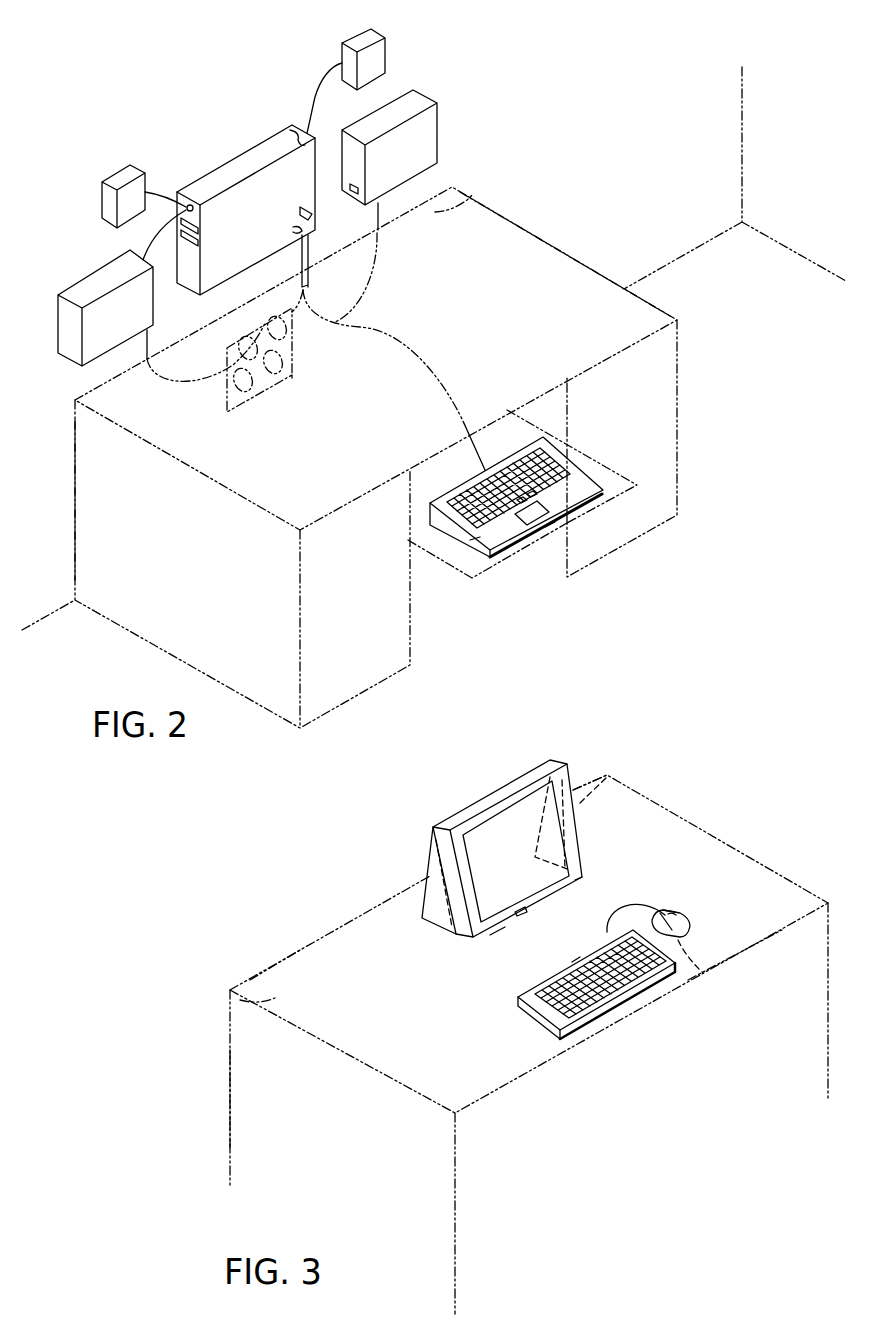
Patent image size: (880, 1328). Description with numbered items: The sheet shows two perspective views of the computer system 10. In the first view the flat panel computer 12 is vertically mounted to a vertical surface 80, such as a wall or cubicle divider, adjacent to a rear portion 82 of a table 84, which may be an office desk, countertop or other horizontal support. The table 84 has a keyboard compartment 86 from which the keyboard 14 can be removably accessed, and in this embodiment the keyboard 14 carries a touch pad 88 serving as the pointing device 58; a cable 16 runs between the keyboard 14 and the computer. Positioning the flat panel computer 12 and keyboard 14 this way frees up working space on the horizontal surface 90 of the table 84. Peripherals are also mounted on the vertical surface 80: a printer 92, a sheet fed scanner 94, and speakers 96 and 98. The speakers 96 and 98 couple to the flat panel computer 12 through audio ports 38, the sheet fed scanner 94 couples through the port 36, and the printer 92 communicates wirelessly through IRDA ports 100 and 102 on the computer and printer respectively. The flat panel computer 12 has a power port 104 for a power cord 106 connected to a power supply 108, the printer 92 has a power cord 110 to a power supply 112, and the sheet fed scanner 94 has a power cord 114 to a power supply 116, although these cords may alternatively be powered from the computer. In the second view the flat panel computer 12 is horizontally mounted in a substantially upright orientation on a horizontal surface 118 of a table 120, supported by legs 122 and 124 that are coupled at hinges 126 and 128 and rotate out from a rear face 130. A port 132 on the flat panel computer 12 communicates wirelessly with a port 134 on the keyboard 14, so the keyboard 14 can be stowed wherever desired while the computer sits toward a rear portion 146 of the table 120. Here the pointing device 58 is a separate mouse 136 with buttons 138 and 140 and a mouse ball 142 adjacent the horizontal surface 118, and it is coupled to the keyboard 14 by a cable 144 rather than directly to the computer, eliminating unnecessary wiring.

In FIG. 2, the computer system 10 is at (305, 66).
In FIG. 3, the computer system 10 is at (528, 718).
In FIG. 2, the flat panel computer 12 is at (258, 144).
In FIG. 3, the flat panel computer 12 is at (457, 817).
In FIG. 2, the keyboard 14 is at (548, 438).
In FIG. 3, the keyboard 14 is at (657, 983).
In FIG. 2, the keyboard cable 16 is at (393, 340).
In FIG. 2, the port 36 is at (203, 227).
In FIG. 2, the ports 38 is at (189, 204).
In FIG. 2, the pointing device 58 is at (548, 507).
In FIG. 3, the pointing device 58 is at (705, 920).
In FIG. 2, the vertical surface 80 is at (50, 600).
In FIG. 2, the rear portion 82 is at (475, 198).
In FIG. 2, the table 84 is at (75, 450).
In FIG. 2, the keyboard compartment 86 is at (480, 537).
In FIG. 2, the touch pad 88 is at (550, 523).
In FIG. 2, the horizontal surface 90 is at (563, 252).
In FIG. 2, the printer 92 is at (425, 138).
In FIG. 2, the sheet fed scanner 94 is at (58, 316).
In FIG. 2, the speaker 96 is at (115, 170).
In FIG. 2, the speaker 98 is at (383, 55).
In FIG. 2, the IRDA port 100 is at (300, 212).
In FIG. 2, the IRDA port 102 is at (351, 192).
In FIG. 2, the power port 104 is at (290, 232).
In FIG. 2, the power cord 106 is at (320, 285).
In FIG. 2, the power supply 108 is at (232, 352).
In FIG. 2, the power cord 110 is at (383, 252).
In FIG. 2, the power supply 112 is at (293, 387).
In FIG. 2, the power cord 114 is at (156, 340).
In FIG. 2, the power supply 116 is at (222, 387).
In FIG. 3, the horizontal surface 118 is at (245, 1003).
In FIG. 3, the table 120 is at (228, 1090).
In FIG. 3, the leg 122 is at (437, 927).
In FIG. 3, the leg 124 is at (618, 779).
In FIG. 3, the hinge 126 is at (456, 952).
In FIG. 3, the hinge 128 is at (574, 892).
In FIG. 3, the rear face 130 is at (490, 935).
In FIG. 3, the port 132 is at (527, 915).
In FIG. 3, the port 134 is at (576, 960).
In FIG. 3, the mouse 136 is at (682, 930).
In FIG. 3, the button 138 is at (675, 913).
In FIG. 3, the button 140 is at (666, 908).
In FIG. 3, the mouse ball 142 is at (711, 976).
In FIG. 3, the cable 144 is at (640, 902).
In FIG. 3, the rear portion 146 is at (260, 969).